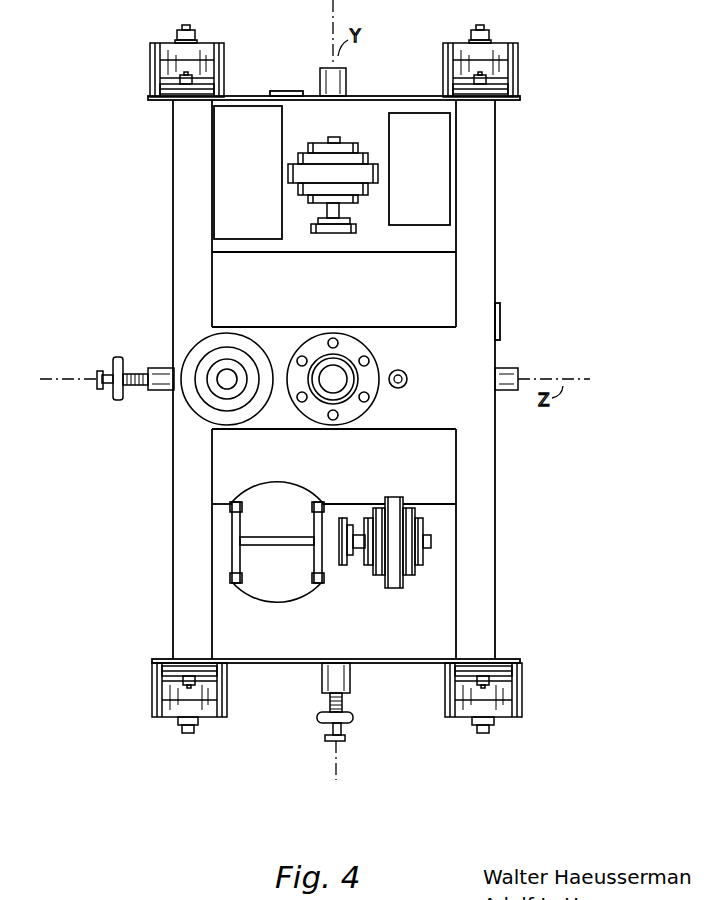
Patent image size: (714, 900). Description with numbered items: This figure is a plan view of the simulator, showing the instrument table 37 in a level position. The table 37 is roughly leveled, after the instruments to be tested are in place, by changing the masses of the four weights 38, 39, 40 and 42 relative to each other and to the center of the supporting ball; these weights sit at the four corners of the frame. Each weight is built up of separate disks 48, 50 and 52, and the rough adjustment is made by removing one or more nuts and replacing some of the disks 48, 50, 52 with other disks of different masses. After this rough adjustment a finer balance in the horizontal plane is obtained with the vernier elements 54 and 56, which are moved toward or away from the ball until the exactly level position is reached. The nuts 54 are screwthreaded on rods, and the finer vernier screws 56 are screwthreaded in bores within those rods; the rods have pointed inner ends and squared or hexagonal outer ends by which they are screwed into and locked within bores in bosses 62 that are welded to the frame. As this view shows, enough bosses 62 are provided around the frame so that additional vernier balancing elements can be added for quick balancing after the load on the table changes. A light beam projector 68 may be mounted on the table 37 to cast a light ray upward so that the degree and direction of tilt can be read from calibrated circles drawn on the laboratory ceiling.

The instrument table 37 is at (364, 631).
The weight 38 is at (533, 716).
The weight 39 is at (148, 710).
The weight 40 is at (530, 67).
The weight 42 is at (140, 58).
The disk 48 is at (458, 43).
The disk 50 is at (444, 64).
The disk 52 is at (444, 87).
The vernier element (nut) 54 is at (354, 719).
The vernier screw 56 is at (325, 739).
The boss 62 is at (346, 72).
The light beam projector 68 is at (406, 377).